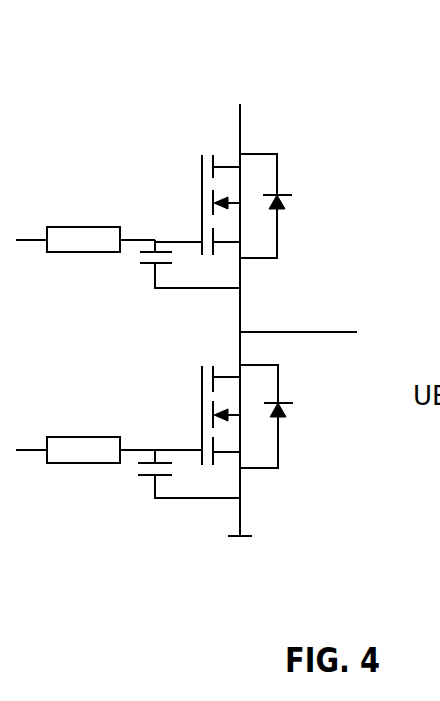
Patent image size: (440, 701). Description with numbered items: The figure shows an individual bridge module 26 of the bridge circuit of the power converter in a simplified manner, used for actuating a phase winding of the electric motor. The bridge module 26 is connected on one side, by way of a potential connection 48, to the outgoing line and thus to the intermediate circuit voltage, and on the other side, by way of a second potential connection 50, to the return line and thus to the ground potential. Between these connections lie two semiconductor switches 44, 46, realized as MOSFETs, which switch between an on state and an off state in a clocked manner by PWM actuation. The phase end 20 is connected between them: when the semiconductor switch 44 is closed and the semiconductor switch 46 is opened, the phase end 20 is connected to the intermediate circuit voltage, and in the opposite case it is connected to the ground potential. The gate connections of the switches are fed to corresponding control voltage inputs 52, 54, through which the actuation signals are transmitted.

The bridge module 26 is at (96, 106).
The potential connection 48 is at (240, 117).
The semiconductor switch 44 is at (277, 172).
The semiconductor switch 46 is at (278, 440).
The control voltage input 52 is at (33, 240).
The control voltage input 54 is at (33, 450).
The phase end 20 is at (282, 330).
The second potential connection 50 is at (247, 540).